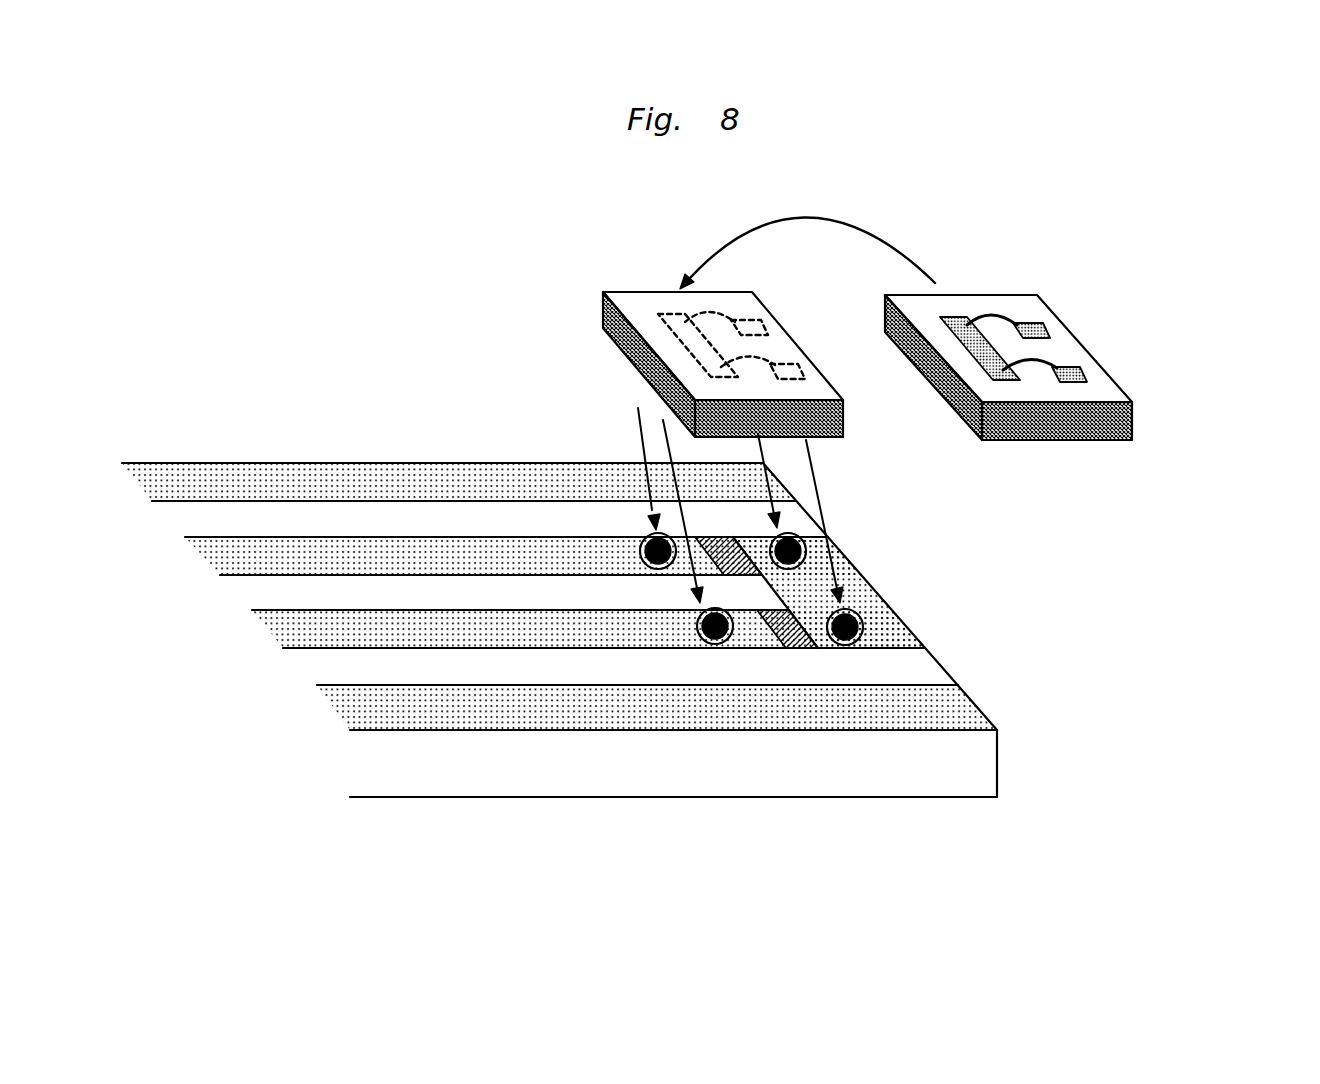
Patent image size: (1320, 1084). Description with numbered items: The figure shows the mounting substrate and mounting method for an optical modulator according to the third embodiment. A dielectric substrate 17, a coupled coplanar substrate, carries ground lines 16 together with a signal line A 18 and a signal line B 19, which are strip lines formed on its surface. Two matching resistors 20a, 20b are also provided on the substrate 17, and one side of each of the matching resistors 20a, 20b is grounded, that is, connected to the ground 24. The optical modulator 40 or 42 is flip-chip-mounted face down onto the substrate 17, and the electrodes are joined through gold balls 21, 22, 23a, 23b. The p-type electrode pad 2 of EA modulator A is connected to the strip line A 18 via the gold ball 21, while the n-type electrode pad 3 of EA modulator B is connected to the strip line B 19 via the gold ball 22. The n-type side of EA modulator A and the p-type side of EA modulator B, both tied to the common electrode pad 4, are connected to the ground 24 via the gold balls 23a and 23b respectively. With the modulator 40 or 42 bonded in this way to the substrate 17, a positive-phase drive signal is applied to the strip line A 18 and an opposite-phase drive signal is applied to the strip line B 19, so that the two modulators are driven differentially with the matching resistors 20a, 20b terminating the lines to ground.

The p-type electrode pad 2 is at (681, 323).
The n-type electrode pad 3 is at (645, 364).
The common electrode pad 4 is at (772, 352).
The ground lines 16 is at (356, 483).
The dielectric substrate 17 is at (970, 768).
The signal line A 18 is at (267, 556).
The signal line B 19 is at (315, 633).
The matching resistor 20a is at (738, 555).
The matching resistor 20b is at (793, 640).
The gold ball 21 is at (642, 541).
The gold ball 22 is at (700, 638).
The gold ball 23a is at (805, 549).
The gold ball 23b is at (868, 628).
The ground 24 is at (870, 592).
The optical modulator 40 is at (605, 308).
The optical modulator 42 is at (1057, 315).